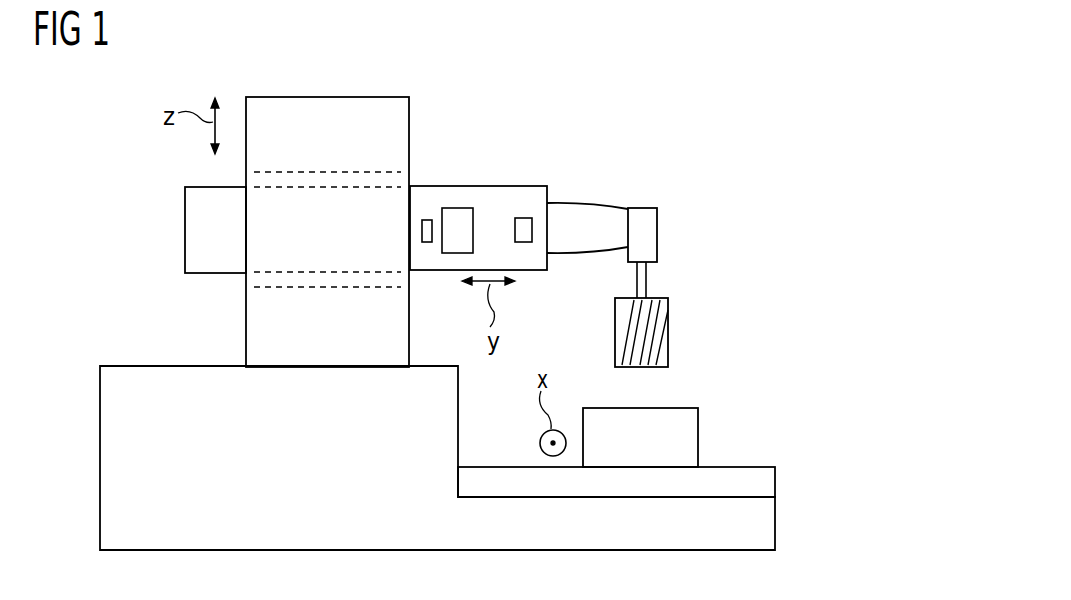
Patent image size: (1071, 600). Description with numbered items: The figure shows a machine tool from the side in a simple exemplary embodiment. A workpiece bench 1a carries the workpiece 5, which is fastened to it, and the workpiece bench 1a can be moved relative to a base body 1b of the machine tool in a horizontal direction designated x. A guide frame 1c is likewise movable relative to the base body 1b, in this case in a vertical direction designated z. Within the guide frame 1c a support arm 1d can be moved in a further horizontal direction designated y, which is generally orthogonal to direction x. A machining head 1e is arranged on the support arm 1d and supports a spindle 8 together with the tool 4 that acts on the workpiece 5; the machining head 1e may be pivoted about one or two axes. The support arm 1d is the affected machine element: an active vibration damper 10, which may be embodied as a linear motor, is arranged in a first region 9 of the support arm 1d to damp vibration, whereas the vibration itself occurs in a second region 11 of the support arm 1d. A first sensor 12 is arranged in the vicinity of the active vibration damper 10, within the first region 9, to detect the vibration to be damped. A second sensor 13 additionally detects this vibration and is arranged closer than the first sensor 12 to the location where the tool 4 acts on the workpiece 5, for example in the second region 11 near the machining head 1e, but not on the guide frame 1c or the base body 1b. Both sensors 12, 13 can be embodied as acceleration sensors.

The workpiece bench 1a is at (765, 480).
The base body 1b is at (100, 450).
The guide frame 1c is at (332, 96).
The support arm 1d is at (512, 186).
The machining head 1e is at (602, 203).
The tool 4 is at (668, 343).
The workpiece 5 is at (698, 437).
The spindle 8 is at (657, 233).
The first region 9 is at (416, 277).
The active vibration damper 10 is at (456, 208).
The second region 11 is at (557, 141).
The first sensor 12 is at (425, 218).
The second sensor 13 is at (523, 242).